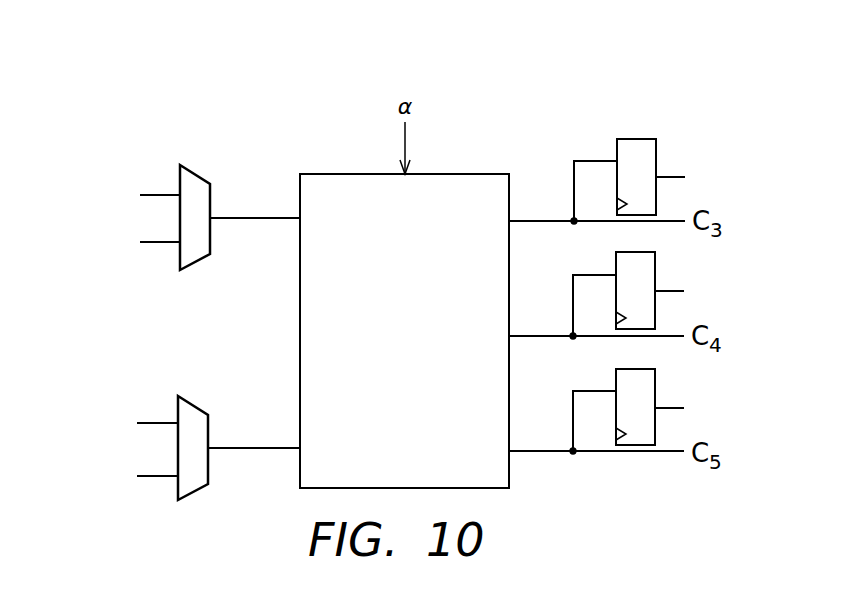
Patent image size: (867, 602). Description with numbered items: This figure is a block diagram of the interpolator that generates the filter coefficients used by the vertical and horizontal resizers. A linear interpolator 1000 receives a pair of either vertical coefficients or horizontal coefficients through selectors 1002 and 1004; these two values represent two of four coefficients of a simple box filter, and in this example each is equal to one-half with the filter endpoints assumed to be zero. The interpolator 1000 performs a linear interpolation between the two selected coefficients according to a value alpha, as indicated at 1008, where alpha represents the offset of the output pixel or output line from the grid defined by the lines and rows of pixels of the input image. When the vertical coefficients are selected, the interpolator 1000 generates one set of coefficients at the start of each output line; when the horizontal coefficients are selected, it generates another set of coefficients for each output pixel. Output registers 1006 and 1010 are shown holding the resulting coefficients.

The linear interpolator 1000 is at (453, 172).
The selector 1002 is at (180, 163).
The selector 1004 is at (178, 394).
The register (flip-flop) 1006 is at (648, 137).
The value alpha indication 1008 is at (652, 265).
The register (flip-flop) 1010 is at (652, 382).